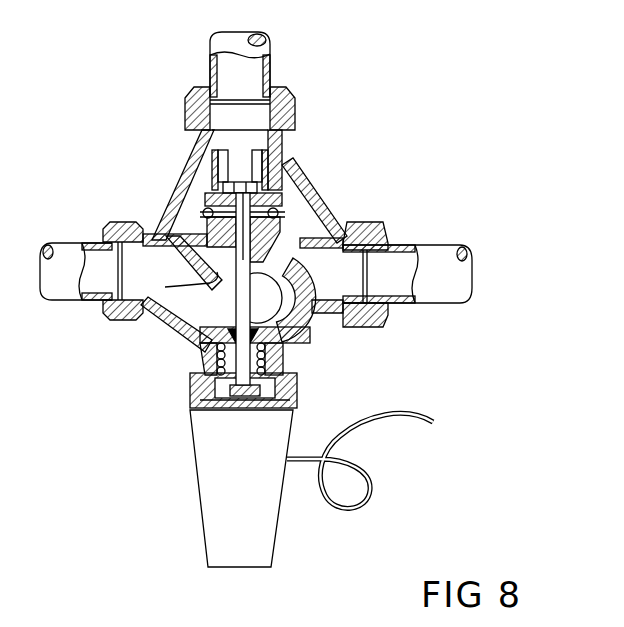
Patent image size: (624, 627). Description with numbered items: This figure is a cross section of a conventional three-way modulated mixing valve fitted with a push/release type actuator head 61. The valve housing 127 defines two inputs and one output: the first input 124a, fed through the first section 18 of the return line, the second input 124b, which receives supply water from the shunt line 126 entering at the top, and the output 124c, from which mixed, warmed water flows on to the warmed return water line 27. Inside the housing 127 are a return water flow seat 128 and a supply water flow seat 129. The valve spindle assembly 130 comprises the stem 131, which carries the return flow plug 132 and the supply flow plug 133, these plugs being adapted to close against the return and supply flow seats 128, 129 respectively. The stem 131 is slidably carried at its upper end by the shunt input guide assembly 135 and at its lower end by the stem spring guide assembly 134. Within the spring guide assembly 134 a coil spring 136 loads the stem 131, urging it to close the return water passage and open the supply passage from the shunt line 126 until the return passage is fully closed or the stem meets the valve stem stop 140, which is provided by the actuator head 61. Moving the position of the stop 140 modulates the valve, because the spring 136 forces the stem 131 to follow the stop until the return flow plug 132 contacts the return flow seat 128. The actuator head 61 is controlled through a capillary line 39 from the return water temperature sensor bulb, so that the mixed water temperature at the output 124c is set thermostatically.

The shunt line 126 is at (271, 50).
The second input 124b is at (192, 133).
The shunt input guide assembly 135 is at (246, 158).
The supply flow plug 133 is at (196, 202).
The first input 124a is at (155, 226).
The output 124c is at (331, 222).
The first section 18 is at (63, 300).
The warmed return water line 27 is at (404, 304).
The supply water flow seat 129 is at (243, 253).
The return flow plug 132 is at (196, 269).
The return water flow seat 128 is at (195, 284).
The housing 127 is at (300, 352).
The valve spindle assembly 130 is at (308, 325).
The stem 131 is at (236, 307).
The coil spring 136 is at (280, 372).
The stem spring guide assembly 134 is at (210, 361).
The valve stem stop 140 is at (197, 388).
The mixing valve actuator head 61 is at (278, 534).
The capillary line 39 is at (368, 468).